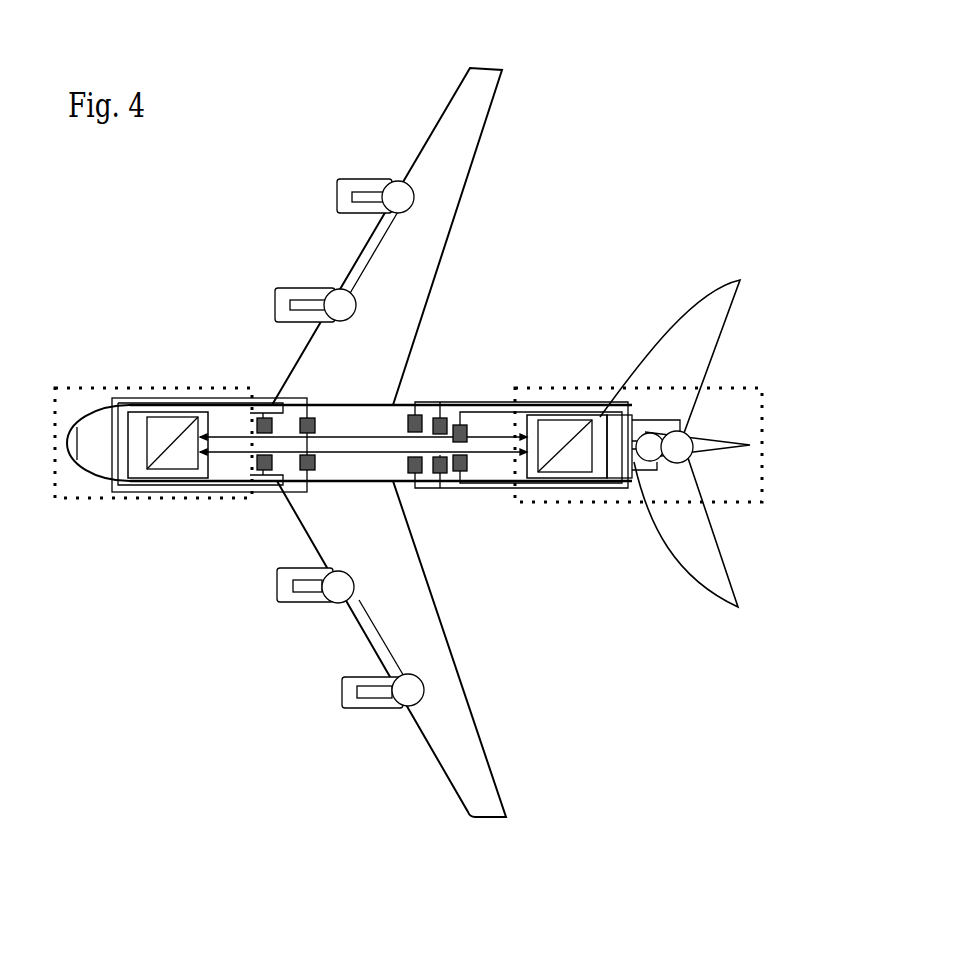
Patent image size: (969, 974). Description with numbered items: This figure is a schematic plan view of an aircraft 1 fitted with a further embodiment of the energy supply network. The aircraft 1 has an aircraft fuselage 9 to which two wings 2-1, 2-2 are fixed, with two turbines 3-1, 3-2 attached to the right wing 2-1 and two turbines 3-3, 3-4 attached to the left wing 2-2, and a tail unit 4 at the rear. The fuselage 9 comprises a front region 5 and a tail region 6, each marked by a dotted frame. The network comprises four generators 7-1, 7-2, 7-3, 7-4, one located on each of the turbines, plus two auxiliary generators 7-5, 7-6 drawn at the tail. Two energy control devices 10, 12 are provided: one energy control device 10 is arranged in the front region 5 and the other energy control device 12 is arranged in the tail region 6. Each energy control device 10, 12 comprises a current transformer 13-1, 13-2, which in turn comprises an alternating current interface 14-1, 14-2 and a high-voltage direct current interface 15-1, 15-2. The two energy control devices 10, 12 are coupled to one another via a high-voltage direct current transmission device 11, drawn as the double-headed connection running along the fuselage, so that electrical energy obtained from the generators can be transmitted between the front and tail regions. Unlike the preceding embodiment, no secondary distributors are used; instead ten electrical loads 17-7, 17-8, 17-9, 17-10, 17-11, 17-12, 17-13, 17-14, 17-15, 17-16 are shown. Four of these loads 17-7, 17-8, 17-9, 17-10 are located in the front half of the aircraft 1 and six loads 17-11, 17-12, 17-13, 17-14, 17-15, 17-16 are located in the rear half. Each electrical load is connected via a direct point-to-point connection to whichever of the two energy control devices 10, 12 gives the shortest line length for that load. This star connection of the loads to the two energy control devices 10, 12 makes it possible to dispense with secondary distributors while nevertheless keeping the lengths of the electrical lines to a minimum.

The aircraft 1 is at (642, 201).
The right wing 2-1 is at (463, 113).
The left wing 2-2 is at (468, 778).
The turbine 3-1 is at (342, 187).
The turbine 3-2 is at (290, 298).
The turbine 3-3 is at (285, 590).
The turbine 3-4 is at (352, 697).
The tail unit 4 is at (720, 300).
The front region 5 is at (67, 485).
The tail region 6 is at (753, 492).
The generator 7-1 is at (338, 295).
The generator 7-2 is at (398, 190).
The generator 7-3 is at (345, 592).
The generator 7-4 is at (403, 700).
The auxiliary generator 7-5 is at (650, 433).
The auxiliary generator 7-6 is at (683, 447).
The aircraft fuselage 9 is at (351, 412).
The energy control device 10 is at (103, 443).
The high-voltage direct current transmission device 11 is at (485, 437).
The energy control device 12 is at (628, 467).
The current transformer 13-1 is at (133, 425).
The current transformer 13-2 is at (598, 415).
The alternating current interface 14-1 is at (163, 427).
The alternating current interface 14-2 is at (576, 462).
The high-voltage direct current interface 15-1 is at (183, 463).
The high-voltage direct current interface 15-2 is at (552, 425).
The electrical load 17-7 is at (257, 418).
The electrical load 17-8 is at (253, 470).
The electrical load 17-9 is at (305, 418).
The electrical load 17-10 is at (305, 472).
The electrical load 17-11 is at (415, 413).
The electrical load 17-12 is at (412, 474).
The electrical load 17-13 is at (440, 416).
The electrical load 17-14 is at (443, 474).
The electrical load 17-15 is at (460, 424).
The electrical load 17-16 is at (463, 472).